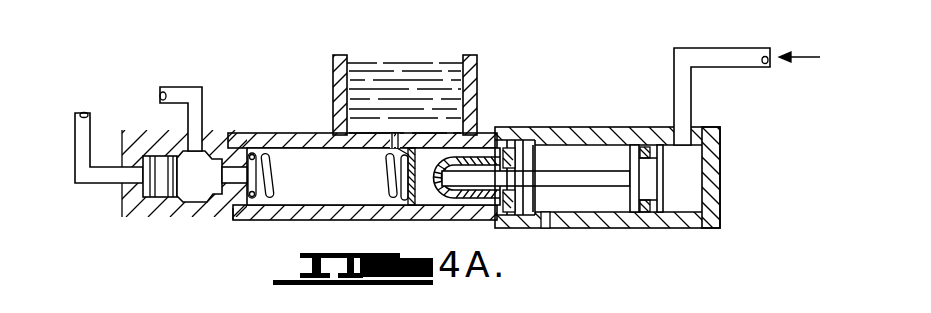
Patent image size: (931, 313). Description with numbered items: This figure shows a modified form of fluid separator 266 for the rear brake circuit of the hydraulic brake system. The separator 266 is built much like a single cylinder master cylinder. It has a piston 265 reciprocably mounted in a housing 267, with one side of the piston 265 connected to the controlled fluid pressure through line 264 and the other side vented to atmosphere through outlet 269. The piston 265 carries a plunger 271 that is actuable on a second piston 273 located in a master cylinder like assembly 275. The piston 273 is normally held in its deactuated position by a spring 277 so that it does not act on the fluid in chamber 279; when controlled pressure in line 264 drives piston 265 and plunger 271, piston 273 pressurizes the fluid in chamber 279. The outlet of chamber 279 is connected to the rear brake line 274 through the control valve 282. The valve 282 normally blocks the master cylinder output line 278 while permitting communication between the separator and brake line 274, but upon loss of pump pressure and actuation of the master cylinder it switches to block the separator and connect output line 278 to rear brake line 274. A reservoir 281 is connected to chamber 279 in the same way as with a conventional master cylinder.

The line 264 is at (750, 55).
The piston 265 is at (660, 192).
The fluid separator 266 is at (499, 91).
The housing 267 is at (675, 218).
The outlet 269 is at (550, 228).
The plunger 271 is at (553, 171).
The piston 273 is at (433, 204).
The rear brake line 274 is at (180, 88).
The master cylinder like assembly 275 is at (283, 207).
The spring 277 is at (381, 200).
The output line 278 is at (85, 183).
The chamber 279 is at (258, 203).
The reservoir 281 is at (420, 63).
The control valve 282 is at (175, 195).